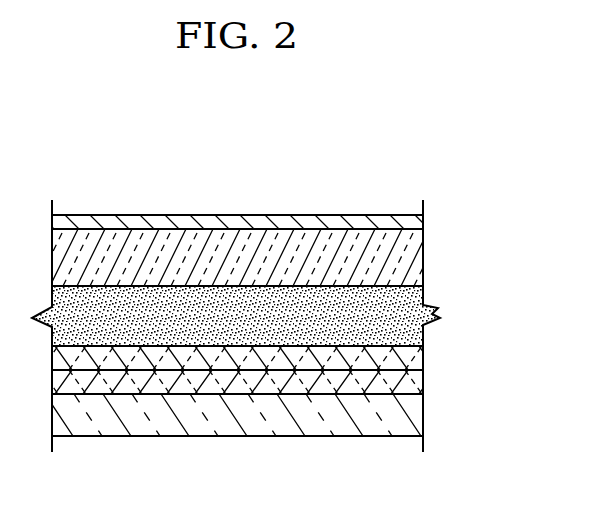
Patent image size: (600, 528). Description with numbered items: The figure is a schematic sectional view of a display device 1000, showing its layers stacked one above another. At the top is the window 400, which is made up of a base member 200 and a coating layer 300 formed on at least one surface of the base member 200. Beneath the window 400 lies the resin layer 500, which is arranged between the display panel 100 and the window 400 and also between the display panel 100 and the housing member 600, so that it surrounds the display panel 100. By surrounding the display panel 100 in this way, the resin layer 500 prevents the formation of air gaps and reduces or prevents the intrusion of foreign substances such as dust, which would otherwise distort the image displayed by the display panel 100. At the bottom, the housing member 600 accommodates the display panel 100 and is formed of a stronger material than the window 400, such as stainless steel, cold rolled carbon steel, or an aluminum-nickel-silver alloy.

The display device 1000 is at (488, 153).
The window 400 is at (508, 198).
The coating layer 300 is at (418, 224).
The base member 200 is at (413, 257).
The resin layer 500 is at (410, 334).
The display panel 100 is at (408, 384).
The housing member 600 is at (408, 419).